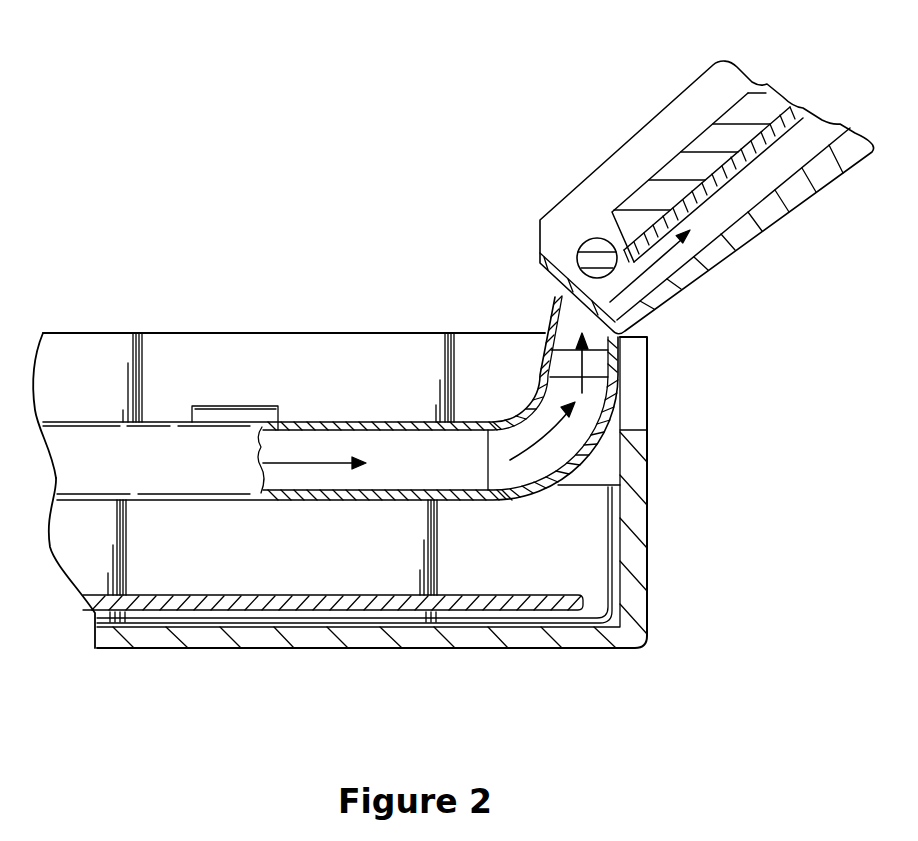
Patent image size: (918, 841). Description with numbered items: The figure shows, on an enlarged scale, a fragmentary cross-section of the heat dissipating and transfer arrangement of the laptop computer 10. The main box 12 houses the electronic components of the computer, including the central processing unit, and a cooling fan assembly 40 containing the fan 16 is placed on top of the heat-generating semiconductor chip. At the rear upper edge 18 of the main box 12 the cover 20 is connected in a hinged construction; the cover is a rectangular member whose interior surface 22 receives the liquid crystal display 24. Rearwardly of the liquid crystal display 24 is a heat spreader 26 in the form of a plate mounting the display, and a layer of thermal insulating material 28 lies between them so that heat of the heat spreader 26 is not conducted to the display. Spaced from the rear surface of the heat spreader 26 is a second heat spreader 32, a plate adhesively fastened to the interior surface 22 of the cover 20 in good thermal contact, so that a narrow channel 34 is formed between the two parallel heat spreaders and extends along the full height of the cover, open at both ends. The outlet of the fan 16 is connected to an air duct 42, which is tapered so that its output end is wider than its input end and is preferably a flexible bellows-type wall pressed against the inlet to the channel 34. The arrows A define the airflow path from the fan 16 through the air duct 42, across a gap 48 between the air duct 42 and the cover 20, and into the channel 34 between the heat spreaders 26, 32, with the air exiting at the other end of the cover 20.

The laptop computer 10 is at (579, 690).
The main box structure 12 is at (88, 560).
The fan 16 is at (88, 438).
The rear upper edge 18 is at (647, 483).
The cover 20 is at (796, 217).
The interior surface 22 is at (822, 150).
The liquid crystal display 24 is at (653, 190).
The heat spreader 26 is at (622, 242).
The thermal insulating material 28 is at (772, 125).
The second heat spreader 32 is at (671, 284).
The channel 34 is at (712, 212).
The cooling fan assembly 40 is at (230, 413).
The air duct 42 is at (330, 398).
The gap 48 is at (540, 290).
The arrows A is at (318, 458).